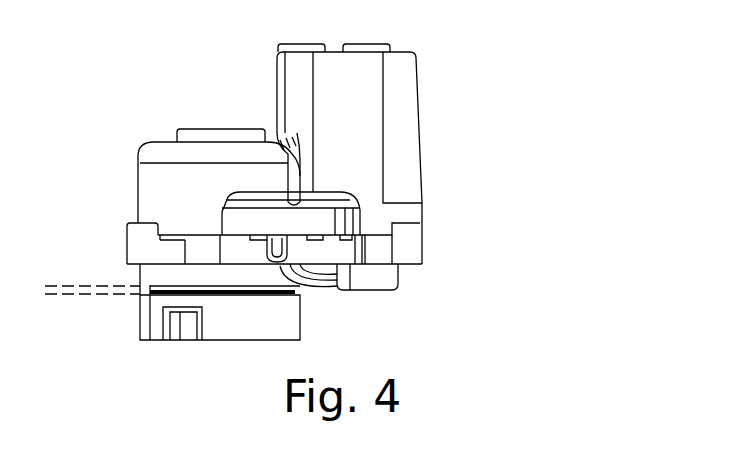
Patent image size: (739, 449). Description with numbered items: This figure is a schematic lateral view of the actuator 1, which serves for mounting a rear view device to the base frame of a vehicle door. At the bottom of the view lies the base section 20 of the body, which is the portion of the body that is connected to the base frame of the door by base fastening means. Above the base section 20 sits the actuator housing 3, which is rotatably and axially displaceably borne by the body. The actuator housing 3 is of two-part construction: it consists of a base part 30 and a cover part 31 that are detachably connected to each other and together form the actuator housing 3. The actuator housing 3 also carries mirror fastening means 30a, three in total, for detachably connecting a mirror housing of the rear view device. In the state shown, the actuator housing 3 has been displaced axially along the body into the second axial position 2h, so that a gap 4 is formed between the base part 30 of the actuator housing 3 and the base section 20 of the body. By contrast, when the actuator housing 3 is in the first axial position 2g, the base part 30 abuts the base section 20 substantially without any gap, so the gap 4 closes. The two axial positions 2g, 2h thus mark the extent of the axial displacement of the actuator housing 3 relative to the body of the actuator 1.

The actuator 1 is at (180, 122).
The actuator housing 3 is at (427, 72).
The cover part 31 is at (422, 132).
The base part 30 is at (402, 275).
The mirror fastening means 30a is at (128, 240).
The second axial position 2h is at (130, 287).
The first axial position 2g is at (128, 297).
The gap 4 is at (93, 297).
The base section 20 is at (303, 318).